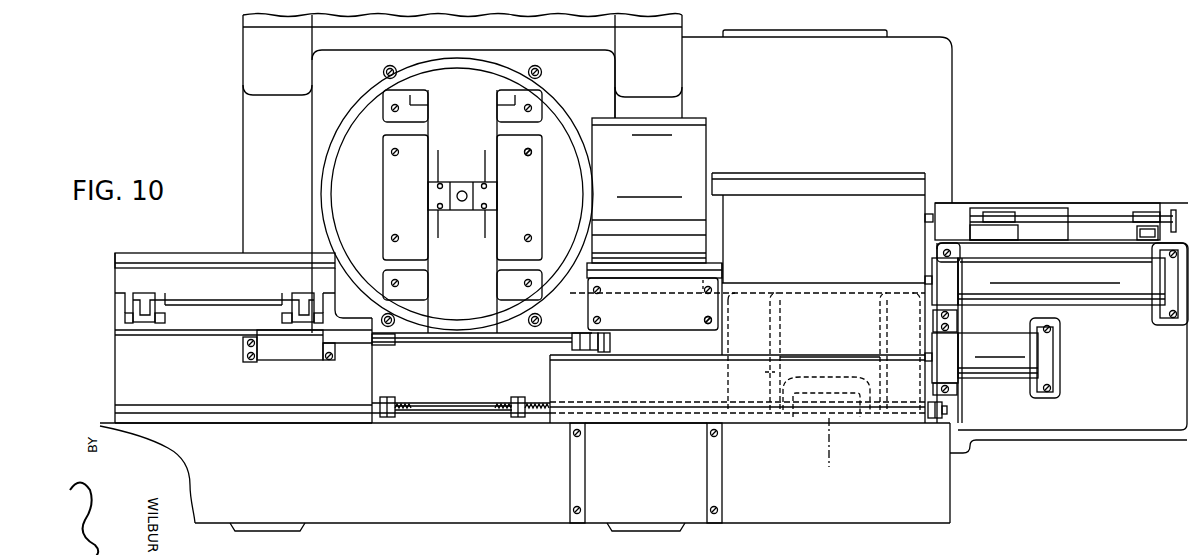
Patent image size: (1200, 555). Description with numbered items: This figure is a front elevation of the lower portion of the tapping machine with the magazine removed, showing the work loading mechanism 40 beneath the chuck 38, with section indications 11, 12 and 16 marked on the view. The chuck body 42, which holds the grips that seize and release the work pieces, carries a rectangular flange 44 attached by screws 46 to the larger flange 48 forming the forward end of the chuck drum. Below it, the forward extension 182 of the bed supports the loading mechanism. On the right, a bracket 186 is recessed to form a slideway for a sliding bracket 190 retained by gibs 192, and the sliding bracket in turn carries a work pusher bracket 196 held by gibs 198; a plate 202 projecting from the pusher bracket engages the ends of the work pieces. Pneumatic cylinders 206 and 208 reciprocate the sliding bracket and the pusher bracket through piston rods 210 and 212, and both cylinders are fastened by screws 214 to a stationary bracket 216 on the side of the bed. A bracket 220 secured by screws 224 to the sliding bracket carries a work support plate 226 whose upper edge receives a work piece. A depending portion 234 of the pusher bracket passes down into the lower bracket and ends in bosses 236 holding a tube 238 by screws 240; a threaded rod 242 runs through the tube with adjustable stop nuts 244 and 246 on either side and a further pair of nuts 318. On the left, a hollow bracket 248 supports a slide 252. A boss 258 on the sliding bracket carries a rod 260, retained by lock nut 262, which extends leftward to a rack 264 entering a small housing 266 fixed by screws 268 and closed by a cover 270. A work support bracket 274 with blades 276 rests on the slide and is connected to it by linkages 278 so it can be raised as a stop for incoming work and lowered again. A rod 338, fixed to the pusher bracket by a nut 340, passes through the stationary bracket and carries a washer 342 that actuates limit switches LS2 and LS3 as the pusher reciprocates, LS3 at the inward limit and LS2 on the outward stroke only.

The chuck 38 is at (350, 94).
The work loading mechanism 40 is at (893, 148).
The chuck body 42 is at (435, 170).
The rectangular flange 44 is at (390, 196).
The screws 46 is at (533, 153).
The flange 48 is at (553, 118).
The forward extension 182 is at (347, 508).
The bracket 186 is at (654, 396).
The sliding bracket 190 is at (727, 341).
The gibs 192 is at (845, 355).
The work pusher bracket 196 is at (749, 244).
The gibs 198 is at (848, 283).
The plate 202 is at (790, 180).
The pneumatic cylinder 206 is at (985, 376).
The pneumatic cylinder 208 is at (1082, 297).
The piston rod 210 is at (928, 357).
The piston rod 212 is at (925, 278).
The screws 214 is at (1170, 320).
The stationary bracket 216 is at (1100, 425).
The bracket 220 is at (630, 319).
The screws 224 is at (705, 325).
The work support plate 226 is at (712, 268).
The depending portion 234 is at (765, 372).
The bosses 236 is at (772, 425).
The tube 238 is at (818, 425).
The screws 240 is at (872, 381).
The threaded rod 242 is at (438, 403).
The stop nut 244 is at (935, 420).
The stop nut 246 is at (518, 418).
The bracket 248 is at (305, 400).
The slide 252 is at (125, 313).
The boss 258 is at (592, 353).
The rod 260 is at (522, 343).
The lock nut 262 is at (577, 351).
The rack 264 is at (360, 343).
The housing 266 is at (303, 355).
The screws 268 is at (247, 360).
The cover 270 is at (265, 330).
The bracket 274 is at (125, 283).
The blades 276 is at (178, 262).
The linkages 278 is at (297, 298).
The nuts 318 is at (390, 418).
The rod 338 is at (1058, 222).
The nut 340 is at (925, 218).
The washer 342 is at (1192, 192).
The limit switch LS2 is at (1145, 212).
The limit switch LS3 is at (1000, 212).
The section line 11 is at (832, 220).
The section line 12 is at (217, 455).
The section line 16 is at (178, 338).